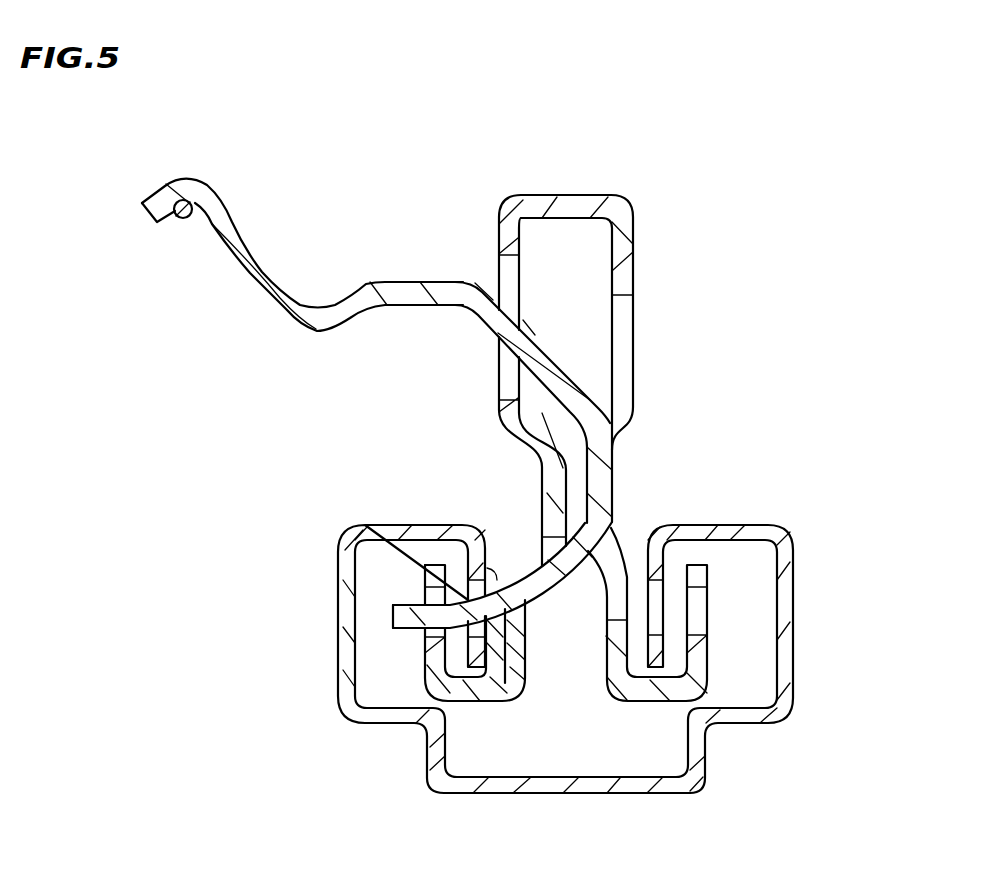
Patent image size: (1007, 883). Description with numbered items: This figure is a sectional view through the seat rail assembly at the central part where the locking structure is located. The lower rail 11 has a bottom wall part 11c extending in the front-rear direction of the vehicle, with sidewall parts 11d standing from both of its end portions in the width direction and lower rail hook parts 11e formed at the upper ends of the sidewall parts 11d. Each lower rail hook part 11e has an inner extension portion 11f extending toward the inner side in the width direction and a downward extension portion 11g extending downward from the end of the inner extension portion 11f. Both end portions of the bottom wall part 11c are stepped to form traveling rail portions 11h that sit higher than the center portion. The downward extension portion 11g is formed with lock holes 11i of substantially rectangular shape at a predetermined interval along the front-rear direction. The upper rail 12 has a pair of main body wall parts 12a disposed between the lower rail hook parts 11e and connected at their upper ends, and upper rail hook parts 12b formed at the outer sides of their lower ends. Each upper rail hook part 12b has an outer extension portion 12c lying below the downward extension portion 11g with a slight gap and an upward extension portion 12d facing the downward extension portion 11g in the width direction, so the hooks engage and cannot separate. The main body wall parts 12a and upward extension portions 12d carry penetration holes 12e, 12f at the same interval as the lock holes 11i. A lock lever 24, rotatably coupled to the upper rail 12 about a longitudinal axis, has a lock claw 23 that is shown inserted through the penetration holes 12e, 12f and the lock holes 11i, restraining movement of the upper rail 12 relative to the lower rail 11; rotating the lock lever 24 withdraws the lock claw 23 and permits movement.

The lower rail 11 is at (803, 531).
The bottom wall part 11c is at (551, 794).
The sidewall part 11d is at (340, 640).
The lower rail hook part 11e is at (470, 520).
The inner extension portion 11f is at (397, 521).
The downward extension portion 11g is at (627, 648).
The traveling rail portion 11h is at (388, 702).
The lock hole 11i is at (497, 582).
The upper rail 12 is at (647, 221).
The main body wall part 12a is at (635, 263).
The upper rail hook part 12b is at (443, 705).
The outer extension portion 12c is at (484, 697).
The upward extension portion 12d is at (440, 565).
The penetration hole 12e is at (517, 613).
The penetration hole 12f is at (425, 583).
The lock claw 23 is at (392, 617).
The lock lever 24 is at (238, 215).